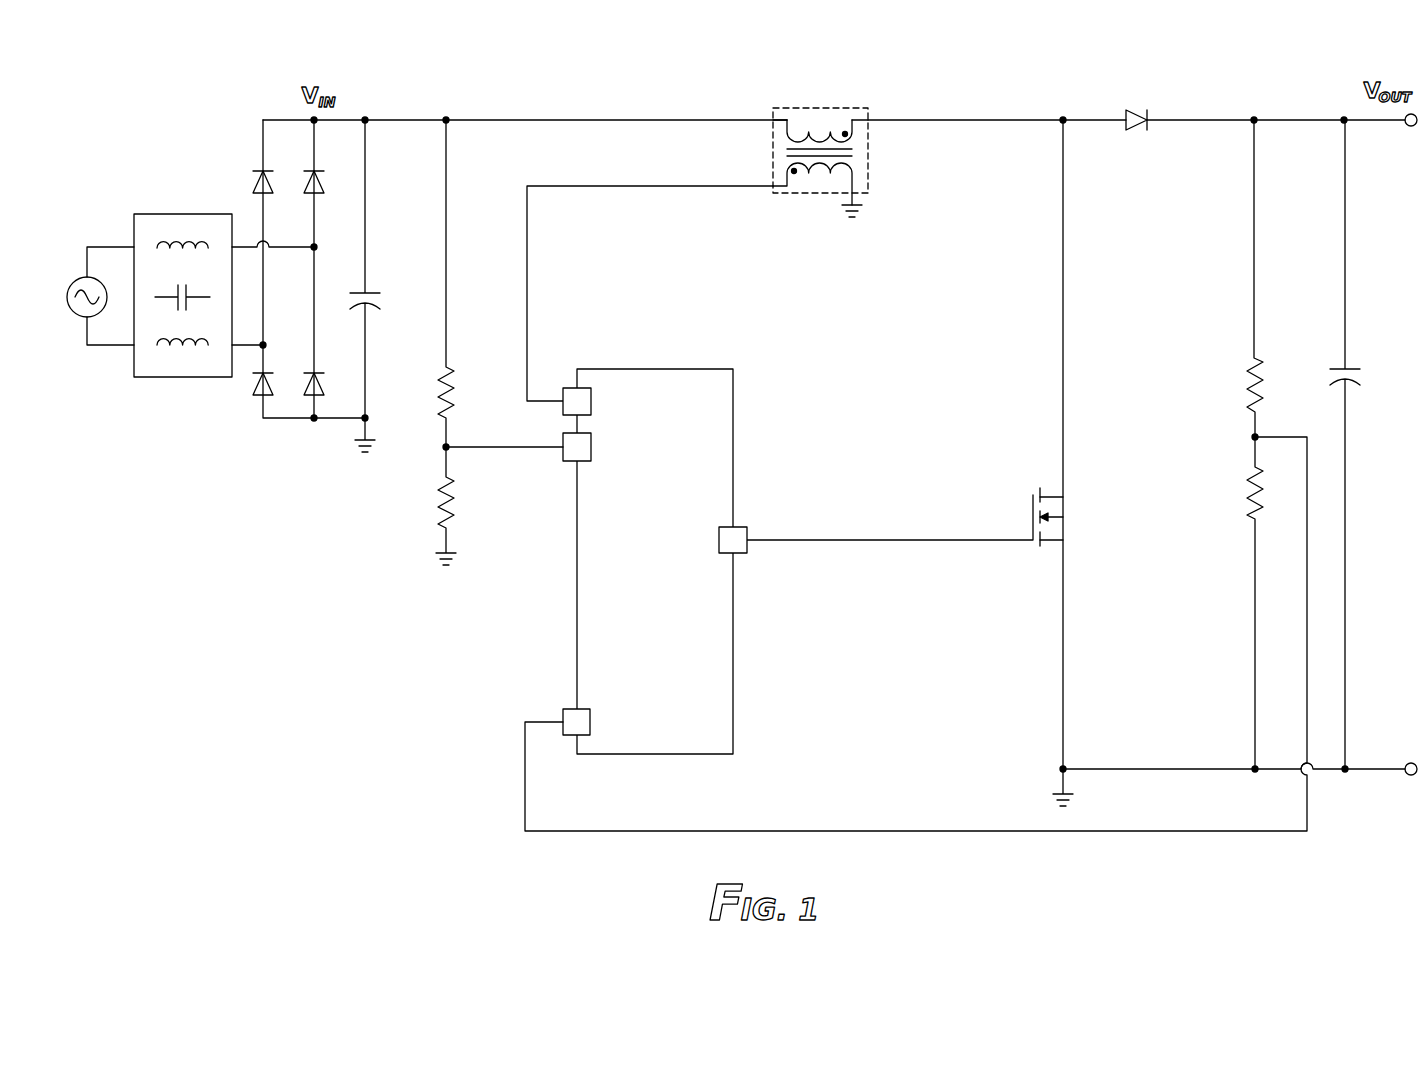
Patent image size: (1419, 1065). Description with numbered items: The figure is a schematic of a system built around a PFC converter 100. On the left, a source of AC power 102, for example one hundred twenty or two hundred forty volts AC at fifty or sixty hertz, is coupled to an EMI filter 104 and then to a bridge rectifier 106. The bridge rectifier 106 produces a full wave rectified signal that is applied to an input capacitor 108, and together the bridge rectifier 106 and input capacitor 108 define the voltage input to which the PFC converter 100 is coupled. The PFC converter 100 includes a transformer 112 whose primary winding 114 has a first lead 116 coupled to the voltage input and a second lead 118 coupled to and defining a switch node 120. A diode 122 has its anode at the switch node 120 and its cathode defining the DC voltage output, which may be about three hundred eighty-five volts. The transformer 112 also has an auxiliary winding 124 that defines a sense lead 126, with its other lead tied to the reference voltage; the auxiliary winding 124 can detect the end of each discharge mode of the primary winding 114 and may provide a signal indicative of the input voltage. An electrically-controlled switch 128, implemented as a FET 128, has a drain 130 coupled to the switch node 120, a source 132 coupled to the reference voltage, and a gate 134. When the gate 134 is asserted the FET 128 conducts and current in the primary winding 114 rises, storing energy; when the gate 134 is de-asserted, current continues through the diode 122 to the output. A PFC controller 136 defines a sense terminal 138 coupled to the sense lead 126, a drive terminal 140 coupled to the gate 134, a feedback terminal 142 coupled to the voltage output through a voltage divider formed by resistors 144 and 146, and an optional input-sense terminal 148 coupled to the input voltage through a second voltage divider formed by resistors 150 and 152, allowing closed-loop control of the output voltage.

The PFC converter 100 is at (505, 103).
The source of AC power 102 is at (70, 279).
The electromagnetic interference filter 104 is at (160, 380).
The bridge rectifier 106 is at (273, 430).
The input capacitor 108 is at (383, 285).
The transformer 112 is at (762, 210).
The primary winding 114 is at (827, 128).
The first lead 116 is at (773, 118).
The second lead 118 is at (868, 118).
The switch node 120 is at (1063, 118).
The diode 122 is at (1137, 110).
The auxiliary winding 124 is at (814, 186).
The sense lead 126 is at (773, 183).
The electrically-controlled switch 128 is at (941, 510).
The drain 130 is at (1063, 497).
The source 132 is at (1065, 542).
The gate 134 is at (1030, 537).
The PFC controller 136 is at (876, 580).
The sense terminal 138 is at (570, 398).
The drive terminal 140 is at (733, 530).
The feedback terminal 142 is at (575, 718).
The resistor 144 is at (1240, 383).
The resistor 146 is at (1235, 492).
The input-sense terminal 148 is at (575, 450).
The resistor 150 is at (460, 352).
The resistor 152 is at (428, 497).